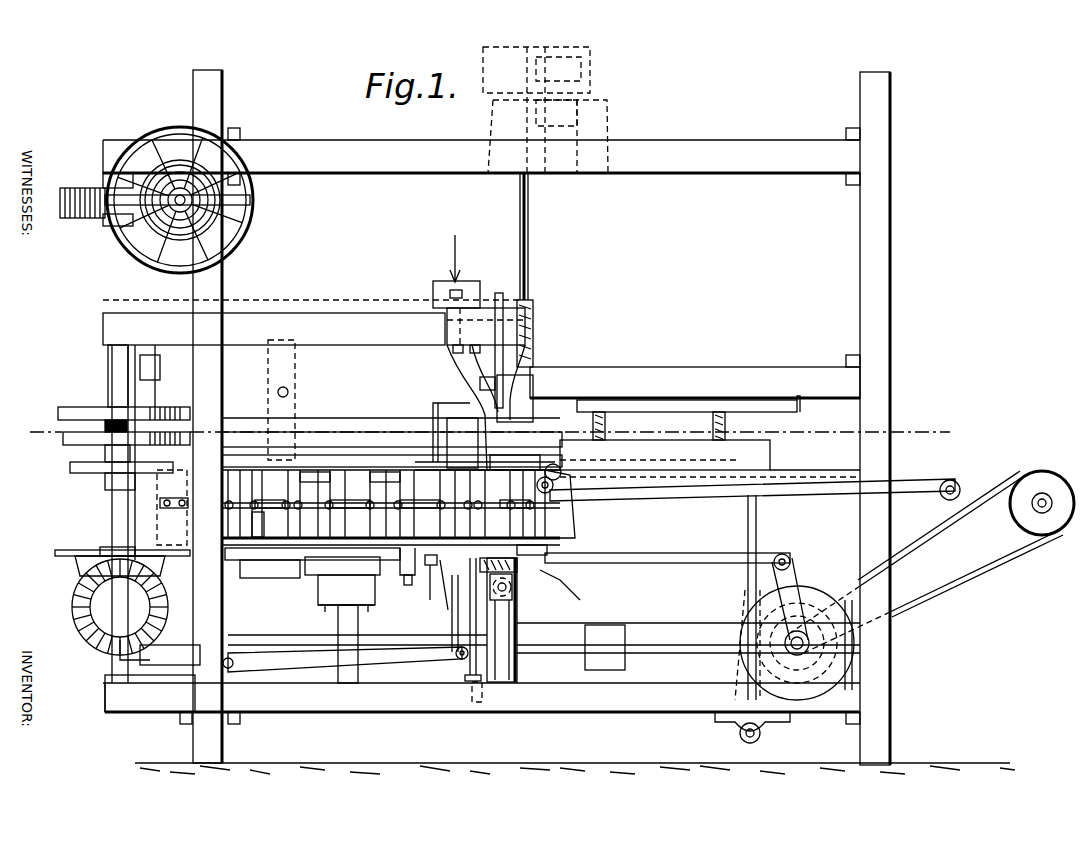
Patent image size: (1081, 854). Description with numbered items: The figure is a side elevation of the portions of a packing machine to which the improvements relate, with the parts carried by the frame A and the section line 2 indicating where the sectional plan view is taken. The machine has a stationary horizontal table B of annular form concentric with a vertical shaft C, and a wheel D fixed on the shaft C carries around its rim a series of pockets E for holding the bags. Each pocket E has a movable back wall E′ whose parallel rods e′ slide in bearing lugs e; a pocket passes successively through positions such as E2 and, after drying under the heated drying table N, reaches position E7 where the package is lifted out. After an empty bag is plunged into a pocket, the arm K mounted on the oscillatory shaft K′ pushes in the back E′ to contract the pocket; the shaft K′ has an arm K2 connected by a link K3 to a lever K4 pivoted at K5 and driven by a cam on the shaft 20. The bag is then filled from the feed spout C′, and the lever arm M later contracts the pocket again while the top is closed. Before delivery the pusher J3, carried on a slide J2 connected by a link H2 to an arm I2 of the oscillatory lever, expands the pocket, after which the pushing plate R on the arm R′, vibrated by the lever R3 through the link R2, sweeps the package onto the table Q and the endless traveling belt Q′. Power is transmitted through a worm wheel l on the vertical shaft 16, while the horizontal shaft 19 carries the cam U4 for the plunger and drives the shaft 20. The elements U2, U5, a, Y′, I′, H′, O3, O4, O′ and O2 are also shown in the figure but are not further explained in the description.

The frame A is at (900, 328).
The hand wheel U2 is at (205, 182).
The cam U4 is at (172, 170).
The pinion U5 is at (180, 170).
The worm wheel l is at (72, 195).
The vertical shaft 16 is at (122, 262).
The section line 2 is at (960, 434).
The block a is at (525, 400).
The feed spout C′ is at (433, 300).
The guide post Y′ is at (295, 368).
The arm R′ is at (442, 405).
The pushing plate R is at (462, 443).
The table Q is at (545, 462).
The link R2 is at (548, 468).
The pusher J3 is at (543, 463).
The lever arm M is at (392, 444).
The heated drying table N is at (391, 493).
The pocket E is at (391, 504).
The movable back wall E′ is at (575, 525).
The pocket position E2 is at (262, 521).
The pocket position E7 is at (560, 588).
The bearing lug e is at (397, 496).
The rod e′ is at (412, 512).
The wheel D is at (350, 485).
The stationary horizontal table B is at (265, 560).
The arm I2 is at (316, 580).
The bracket I′ is at (410, 585).
The vertical shaft C is at (358, 632).
The link H2 is at (432, 585).
The lever H′ is at (446, 605).
The link O3 is at (458, 632).
The lever O4 is at (345, 654).
The rod O′ is at (468, 675).
The arm O2 is at (517, 645).
The horizontal shaft 19 is at (265, 642).
The arm K is at (498, 620).
The oscillatory shaft K′ is at (515, 595).
The arm K2 is at (515, 580).
The slide J2 is at (541, 545).
The endless traveling belt Q′ is at (622, 472).
The link K3 is at (690, 560).
The lever R3 is at (758, 530).
The lever K4 is at (792, 568).
The horizontal shaft 20 is at (808, 640).
The pivot K5 is at (760, 738).